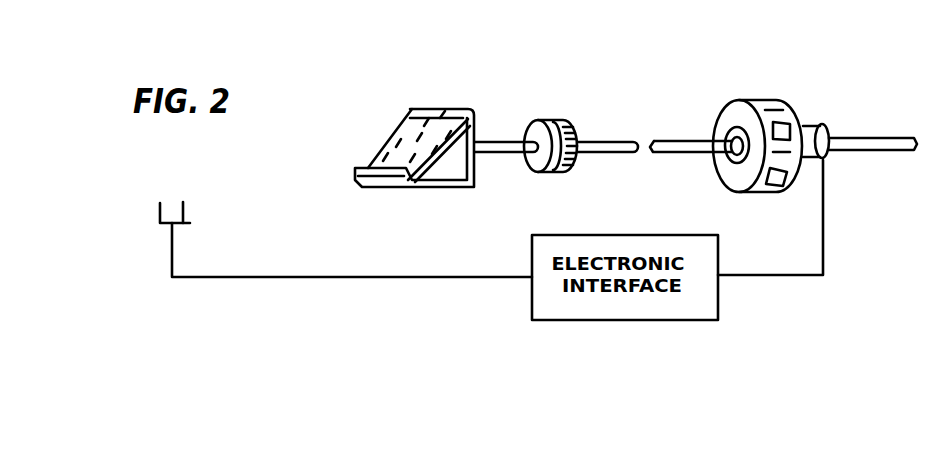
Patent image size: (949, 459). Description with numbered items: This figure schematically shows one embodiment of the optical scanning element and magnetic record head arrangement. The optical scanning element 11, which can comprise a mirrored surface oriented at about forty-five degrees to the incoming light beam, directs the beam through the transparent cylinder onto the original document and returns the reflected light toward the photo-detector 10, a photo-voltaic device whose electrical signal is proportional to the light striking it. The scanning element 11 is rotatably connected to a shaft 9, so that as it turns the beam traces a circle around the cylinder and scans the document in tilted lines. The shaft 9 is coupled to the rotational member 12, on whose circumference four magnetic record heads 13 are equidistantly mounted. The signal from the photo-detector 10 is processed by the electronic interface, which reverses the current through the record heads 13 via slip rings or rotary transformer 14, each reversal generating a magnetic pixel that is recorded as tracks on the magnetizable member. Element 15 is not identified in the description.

The shaft 9 is at (650, 136).
The photo-detector 10 is at (190, 223).
The optical scanning element 11 is at (390, 144).
The rotational member 12 is at (787, 110).
The magnetic record heads 13 is at (767, 127).
The slip rings or rotary transformer 14 is at (827, 131).
The prism shaft 15 is at (476, 140).